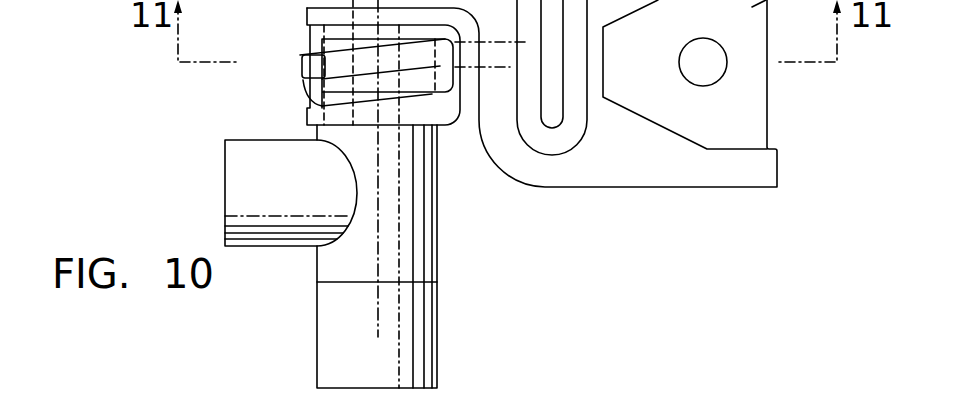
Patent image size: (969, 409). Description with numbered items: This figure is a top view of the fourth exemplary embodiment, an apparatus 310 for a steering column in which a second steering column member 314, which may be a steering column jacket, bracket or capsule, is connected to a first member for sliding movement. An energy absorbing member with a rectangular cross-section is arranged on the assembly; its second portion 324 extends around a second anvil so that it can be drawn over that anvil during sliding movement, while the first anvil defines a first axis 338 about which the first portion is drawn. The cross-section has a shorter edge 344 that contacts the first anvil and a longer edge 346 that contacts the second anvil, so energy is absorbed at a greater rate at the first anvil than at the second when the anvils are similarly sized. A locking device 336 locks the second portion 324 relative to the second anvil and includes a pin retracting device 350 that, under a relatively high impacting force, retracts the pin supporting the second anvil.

The apparatus 310 is at (566, 152).
The second steering column member 314 is at (528, 172).
The second portion 324 is at (303, 56).
The locking device 336 is at (298, 311).
The first axis 338 is at (605, 405).
The shorter edge 344 is at (302, 82).
The longer edge 346 is at (302, 64).
The pin retracting device 350 is at (405, 238).